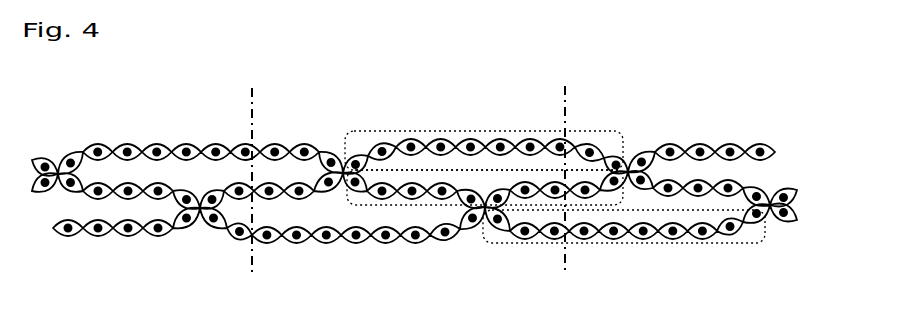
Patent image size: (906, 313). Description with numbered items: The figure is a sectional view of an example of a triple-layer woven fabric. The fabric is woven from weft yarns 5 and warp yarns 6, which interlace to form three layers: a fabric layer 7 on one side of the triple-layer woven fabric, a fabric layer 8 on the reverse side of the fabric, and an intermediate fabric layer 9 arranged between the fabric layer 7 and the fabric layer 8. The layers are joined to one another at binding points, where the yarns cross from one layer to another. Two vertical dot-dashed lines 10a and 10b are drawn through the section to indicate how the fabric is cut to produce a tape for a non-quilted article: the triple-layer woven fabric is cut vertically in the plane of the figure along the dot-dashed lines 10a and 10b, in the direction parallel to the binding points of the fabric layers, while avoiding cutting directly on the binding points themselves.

The weft yarns 5 is at (137, 139).
The warp yarns 6 is at (163, 139).
The fabric layer on one side 7 is at (453, 132).
The fabric layer on the reverse side 8 is at (522, 247).
The intermediate fabric layer 9 is at (348, 202).
The dot-dashed line 10a is at (267, 174).
The dot-dashed line 10b is at (580, 174).